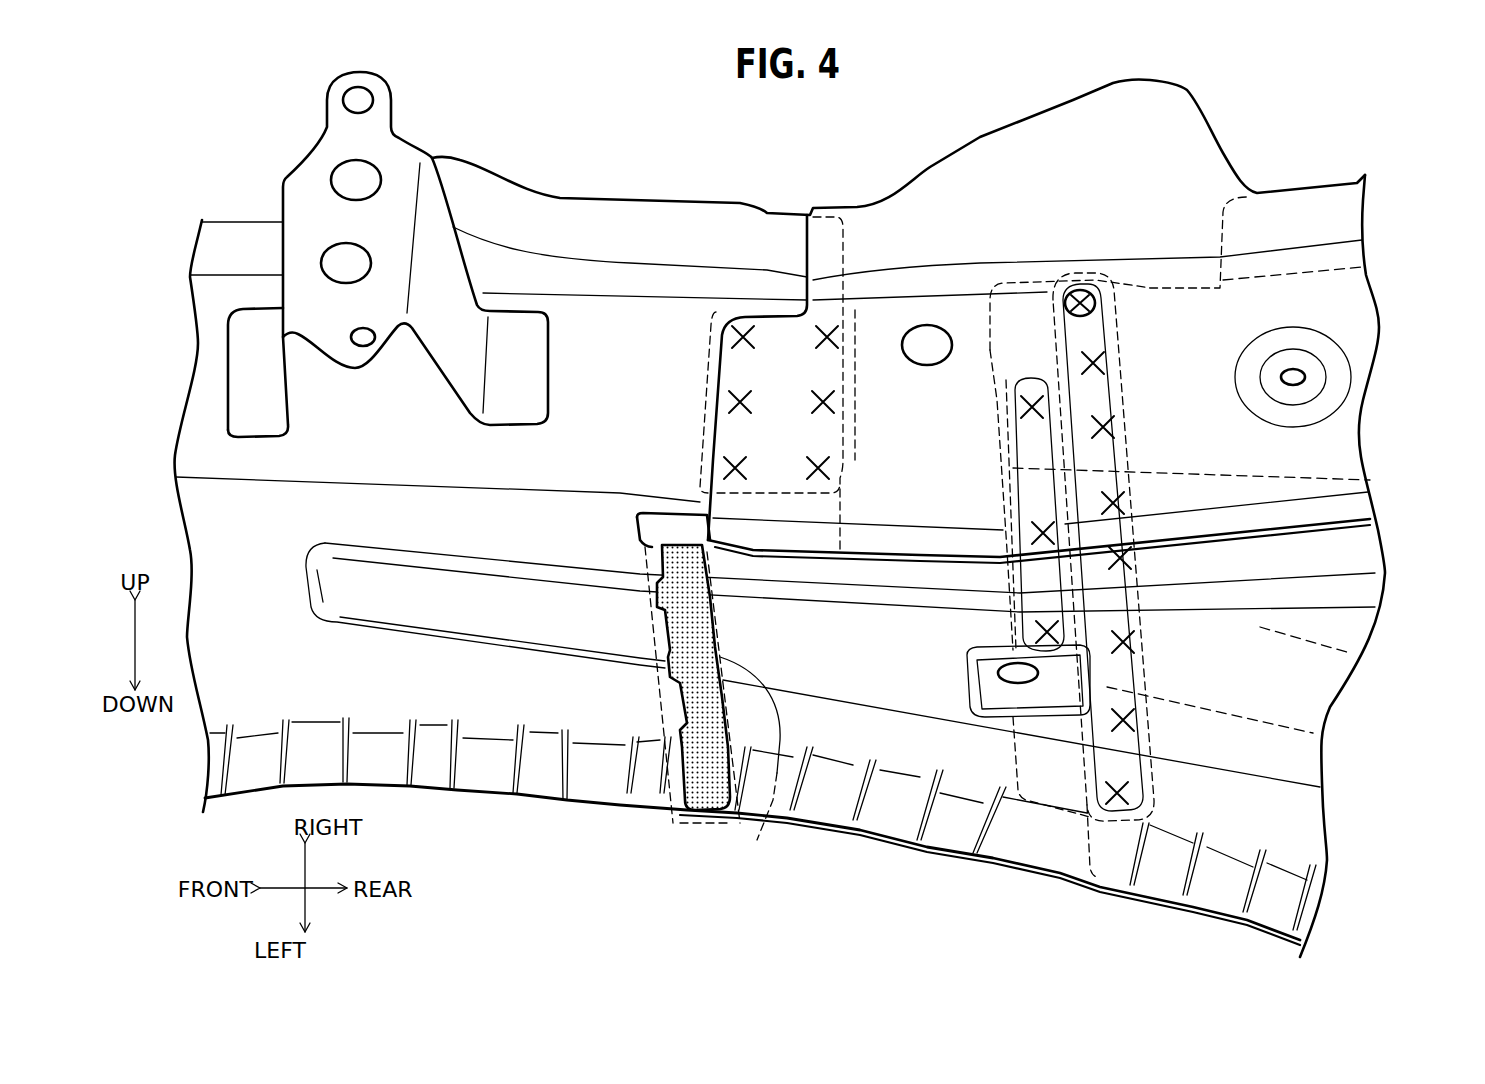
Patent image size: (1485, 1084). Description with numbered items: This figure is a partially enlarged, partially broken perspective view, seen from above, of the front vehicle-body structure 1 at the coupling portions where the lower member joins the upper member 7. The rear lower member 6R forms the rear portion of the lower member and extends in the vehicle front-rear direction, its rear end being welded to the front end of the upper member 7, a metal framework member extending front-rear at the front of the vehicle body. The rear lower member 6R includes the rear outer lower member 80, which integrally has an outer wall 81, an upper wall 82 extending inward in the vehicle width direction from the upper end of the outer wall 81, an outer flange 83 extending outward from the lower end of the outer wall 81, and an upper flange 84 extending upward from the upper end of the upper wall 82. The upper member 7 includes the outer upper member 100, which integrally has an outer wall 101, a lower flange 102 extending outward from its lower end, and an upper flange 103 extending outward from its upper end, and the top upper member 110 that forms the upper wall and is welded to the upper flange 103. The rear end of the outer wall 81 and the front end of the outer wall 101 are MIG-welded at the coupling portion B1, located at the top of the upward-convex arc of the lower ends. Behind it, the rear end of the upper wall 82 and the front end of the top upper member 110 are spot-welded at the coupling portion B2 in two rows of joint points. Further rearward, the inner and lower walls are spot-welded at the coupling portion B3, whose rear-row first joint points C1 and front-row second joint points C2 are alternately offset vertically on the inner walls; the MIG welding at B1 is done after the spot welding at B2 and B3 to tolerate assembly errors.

The front vehicle-body structure 1 is at (778, 168).
The outer upper member 100 is at (1372, 432).
The outer wall 101 is at (1300, 687).
The lower flange 102 is at (831, 805).
The upper flange 103 is at (637, 517).
The top upper member 110 is at (1340, 317).
The rear outer lower member 80 is at (185, 342).
The outer wall 81 is at (212, 517).
The upper wall 82 is at (203, 430).
The outer flange 83 is at (247, 767).
The upper flange 84 is at (213, 253).
The upper member 7 is at (1007, 885).
The rear lower member 6R is at (490, 812).
The coupling portion B1 is at (775, 838).
The coupling portion B2 is at (710, 397).
The coupling portion B3 is at (985, 330).
The first joint points C1 is at (1113, 370).
The second joint points C2 is at (1031, 378).